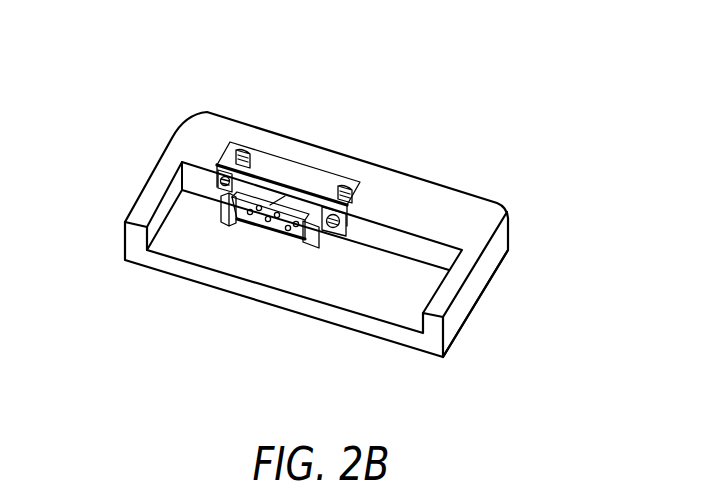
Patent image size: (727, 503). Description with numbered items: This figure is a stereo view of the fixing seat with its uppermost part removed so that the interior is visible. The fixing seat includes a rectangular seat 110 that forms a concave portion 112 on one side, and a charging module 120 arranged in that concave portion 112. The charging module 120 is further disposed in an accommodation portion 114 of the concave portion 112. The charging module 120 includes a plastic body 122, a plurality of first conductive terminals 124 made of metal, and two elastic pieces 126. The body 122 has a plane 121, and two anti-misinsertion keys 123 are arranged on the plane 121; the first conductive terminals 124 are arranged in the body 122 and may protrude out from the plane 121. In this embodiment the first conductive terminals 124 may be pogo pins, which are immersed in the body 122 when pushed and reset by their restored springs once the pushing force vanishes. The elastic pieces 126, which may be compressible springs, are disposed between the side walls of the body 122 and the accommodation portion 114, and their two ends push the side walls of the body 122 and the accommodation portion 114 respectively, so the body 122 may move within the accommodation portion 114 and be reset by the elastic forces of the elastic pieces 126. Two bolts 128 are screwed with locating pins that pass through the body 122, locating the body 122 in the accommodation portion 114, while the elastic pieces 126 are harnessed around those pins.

The seat 110 is at (211, 130).
The concave portion 112 is at (397, 267).
The accommodation portion 114 is at (283, 175).
The charging module 120 is at (64, 315).
The plane 121 is at (228, 226).
The body 122 is at (250, 212).
The anti-misinsertion keys 123 is at (295, 228).
The first conductive terminals 124 is at (270, 205).
The elastic pieces 126 is at (348, 203).
The bolts 128 is at (330, 232).